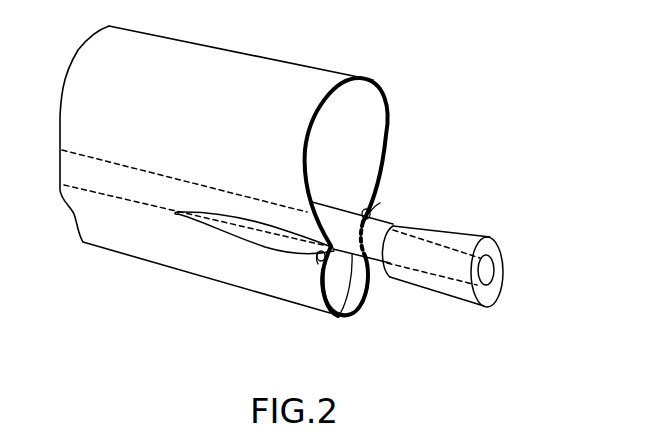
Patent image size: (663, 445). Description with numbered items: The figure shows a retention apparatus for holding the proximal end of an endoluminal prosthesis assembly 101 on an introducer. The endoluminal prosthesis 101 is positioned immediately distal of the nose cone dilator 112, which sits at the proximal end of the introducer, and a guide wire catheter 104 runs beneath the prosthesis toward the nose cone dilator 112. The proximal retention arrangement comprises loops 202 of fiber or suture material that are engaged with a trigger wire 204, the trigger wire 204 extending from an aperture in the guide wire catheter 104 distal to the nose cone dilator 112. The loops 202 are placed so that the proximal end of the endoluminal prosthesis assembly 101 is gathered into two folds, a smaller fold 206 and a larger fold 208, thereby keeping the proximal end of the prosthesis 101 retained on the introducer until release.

The endoluminal prosthesis 101 is at (130, 238).
The guide wire catheter 104 is at (395, 215).
The nose cone dilator 112 is at (471, 236).
The loops 202 is at (372, 212).
The trigger wire 204 is at (337, 316).
The smaller fold 206 is at (366, 284).
The larger fold 208 is at (273, 72).